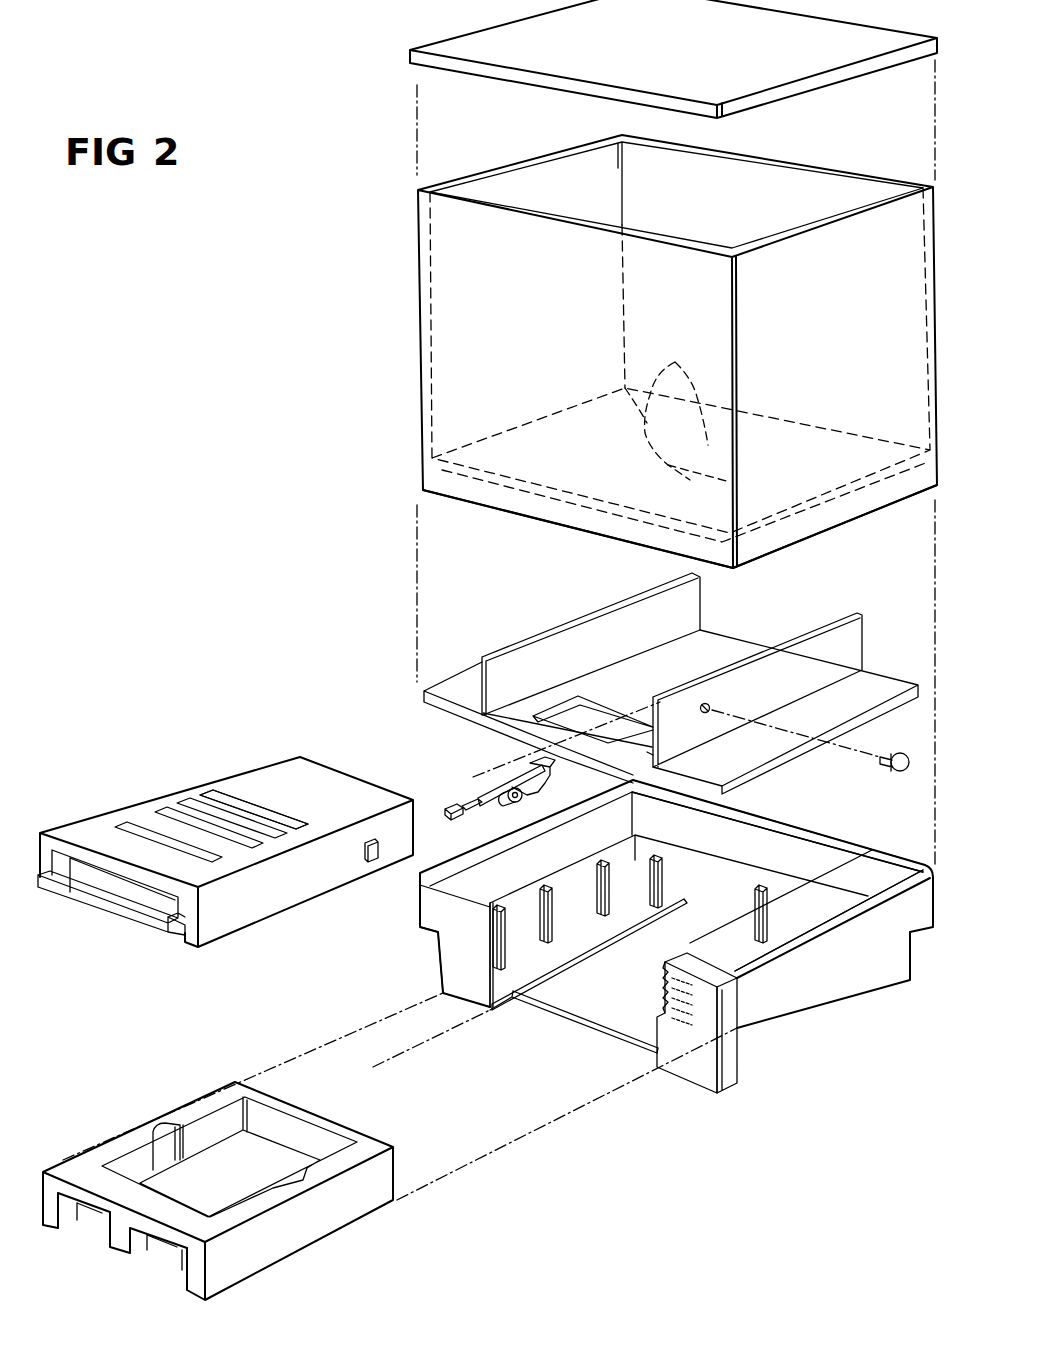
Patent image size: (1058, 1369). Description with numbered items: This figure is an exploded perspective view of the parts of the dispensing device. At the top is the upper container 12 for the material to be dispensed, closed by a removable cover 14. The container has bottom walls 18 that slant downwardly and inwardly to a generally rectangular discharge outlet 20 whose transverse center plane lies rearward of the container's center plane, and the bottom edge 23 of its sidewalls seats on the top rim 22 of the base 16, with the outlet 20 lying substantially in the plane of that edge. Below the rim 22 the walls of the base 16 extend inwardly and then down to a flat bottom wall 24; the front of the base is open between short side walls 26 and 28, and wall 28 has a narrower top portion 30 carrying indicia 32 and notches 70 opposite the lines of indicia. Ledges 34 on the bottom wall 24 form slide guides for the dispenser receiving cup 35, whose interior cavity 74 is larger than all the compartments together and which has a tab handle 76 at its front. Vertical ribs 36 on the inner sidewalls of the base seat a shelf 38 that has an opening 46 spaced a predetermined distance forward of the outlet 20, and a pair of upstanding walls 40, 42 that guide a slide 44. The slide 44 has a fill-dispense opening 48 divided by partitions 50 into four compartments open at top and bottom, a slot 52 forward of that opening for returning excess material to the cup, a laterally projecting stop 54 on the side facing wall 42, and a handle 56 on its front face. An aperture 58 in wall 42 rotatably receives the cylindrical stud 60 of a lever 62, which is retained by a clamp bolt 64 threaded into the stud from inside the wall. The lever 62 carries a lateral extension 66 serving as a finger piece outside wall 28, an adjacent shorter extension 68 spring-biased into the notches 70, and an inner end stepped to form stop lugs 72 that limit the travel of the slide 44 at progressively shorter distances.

The upper container 12 is at (410, 275).
The removable cover 14 is at (402, 58).
The base 16 is at (830, 1035).
The bottom walls 18 is at (666, 409).
The discharge outlet 20 is at (650, 483).
The top rim 22 is at (840, 917).
The bottom edge 23 is at (567, 530).
The bottom wall 24 is at (575, 1002).
The side wall 26 is at (462, 962).
The side wall 28 is at (687, 1060).
The top portion 30 is at (713, 1010).
The indicia 32 is at (690, 980).
The ledges 34 is at (597, 948).
The dispenser receiving cup 35 is at (301, 1239).
The ribs 36 is at (606, 887).
The shelf 38 is at (792, 763).
The upstanding wall 40 is at (582, 637).
The upstanding wall 42 is at (825, 642).
The slide 44 is at (250, 913).
The opening 46 is at (600, 707).
The fill-dispense opening 48 is at (237, 790).
The partitions 50 is at (206, 795).
The slot 52 is at (133, 822).
The stop 54 is at (368, 863).
The handle 56 is at (95, 903).
The aperture 58 is at (710, 705).
The cylindrical stud 60 is at (500, 783).
The lever 62 is at (468, 787).
The clamp bolt 64 is at (905, 770).
The lateral extension 66 is at (445, 812).
The shorter extension 68 is at (477, 811).
The notches 70 is at (663, 984).
The stop lugs 72 is at (530, 762).
The interior cavity 74 is at (218, 1155).
The tab handle 76 is at (118, 1247).